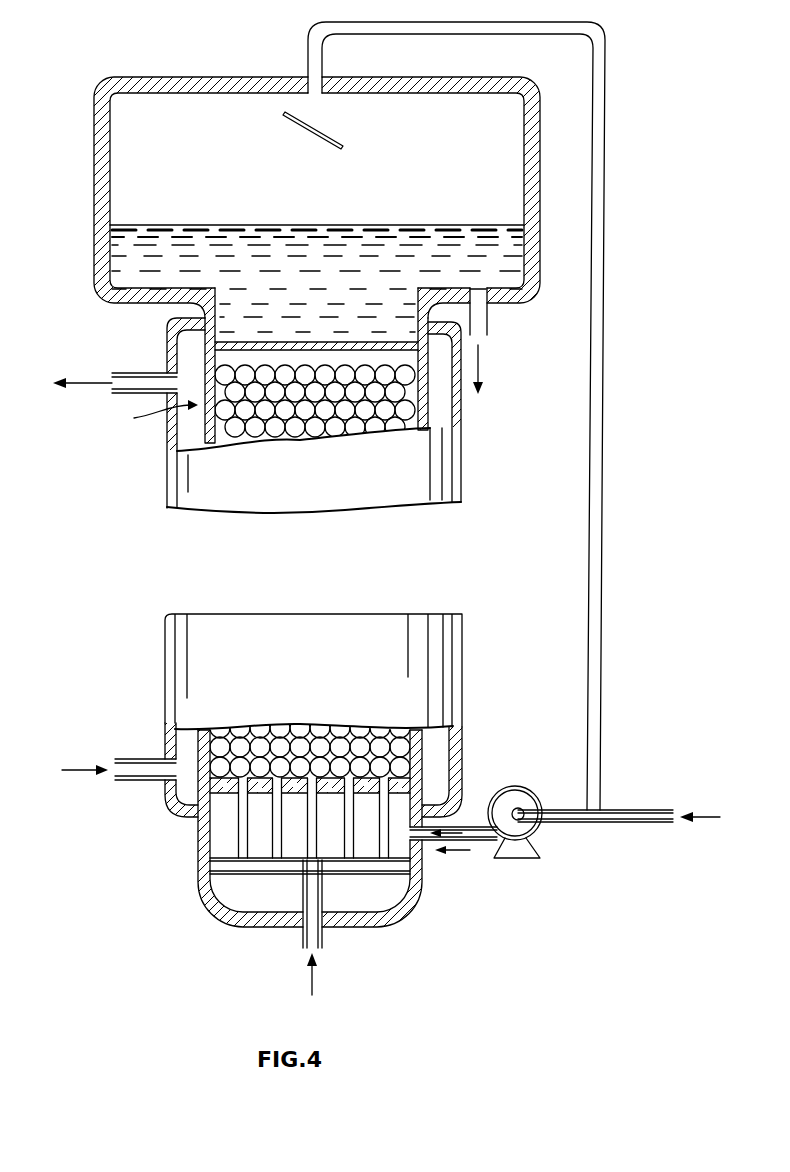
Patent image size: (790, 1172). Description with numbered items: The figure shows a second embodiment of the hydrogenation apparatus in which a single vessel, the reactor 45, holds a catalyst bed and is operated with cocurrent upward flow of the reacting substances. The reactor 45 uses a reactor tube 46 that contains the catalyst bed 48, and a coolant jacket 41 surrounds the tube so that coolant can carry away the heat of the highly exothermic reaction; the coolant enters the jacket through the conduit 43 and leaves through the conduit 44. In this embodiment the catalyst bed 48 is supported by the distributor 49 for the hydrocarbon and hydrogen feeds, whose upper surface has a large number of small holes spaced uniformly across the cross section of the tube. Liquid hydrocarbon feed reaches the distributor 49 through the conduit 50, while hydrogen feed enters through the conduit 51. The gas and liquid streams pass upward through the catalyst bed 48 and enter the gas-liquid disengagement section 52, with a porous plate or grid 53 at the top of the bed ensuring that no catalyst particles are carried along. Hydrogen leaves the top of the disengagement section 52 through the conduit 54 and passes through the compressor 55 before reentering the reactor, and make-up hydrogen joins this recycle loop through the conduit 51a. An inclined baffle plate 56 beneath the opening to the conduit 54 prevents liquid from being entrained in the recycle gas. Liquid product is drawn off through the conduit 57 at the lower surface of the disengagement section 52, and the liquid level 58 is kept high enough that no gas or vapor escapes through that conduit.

The coolant jacket 41 is at (170, 333).
The coolant inlet conduit 43 is at (137, 783).
The coolant outlet conduit 44 is at (112, 376).
The reactor 45 is at (190, 492).
The reactor tube 46 is at (266, 365).
The catalyst bed 48 is at (240, 416).
The distributor 49 is at (302, 798).
The liquid hydrocarbon feed conduit 50 is at (292, 938).
The hydrogen feed conduit 51 is at (479, 849).
The make-up hydrogen conduit 51a is at (650, 804).
The gas-liquid disengagement section 52 is at (96, 211).
The porous plate or grid 53 is at (268, 340).
The hydrogen removal conduit 54 is at (605, 107).
The compressor 55 is at (521, 861).
The inclined baffle plate 56 is at (338, 150).
The liquid product conduit 57 is at (488, 332).
The liquid level 58 is at (395, 226).